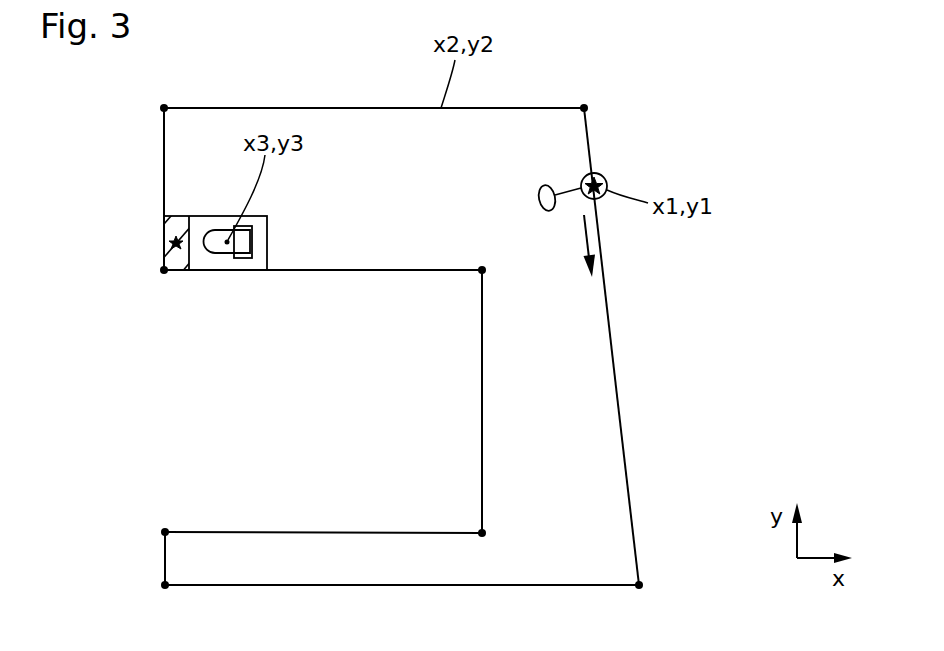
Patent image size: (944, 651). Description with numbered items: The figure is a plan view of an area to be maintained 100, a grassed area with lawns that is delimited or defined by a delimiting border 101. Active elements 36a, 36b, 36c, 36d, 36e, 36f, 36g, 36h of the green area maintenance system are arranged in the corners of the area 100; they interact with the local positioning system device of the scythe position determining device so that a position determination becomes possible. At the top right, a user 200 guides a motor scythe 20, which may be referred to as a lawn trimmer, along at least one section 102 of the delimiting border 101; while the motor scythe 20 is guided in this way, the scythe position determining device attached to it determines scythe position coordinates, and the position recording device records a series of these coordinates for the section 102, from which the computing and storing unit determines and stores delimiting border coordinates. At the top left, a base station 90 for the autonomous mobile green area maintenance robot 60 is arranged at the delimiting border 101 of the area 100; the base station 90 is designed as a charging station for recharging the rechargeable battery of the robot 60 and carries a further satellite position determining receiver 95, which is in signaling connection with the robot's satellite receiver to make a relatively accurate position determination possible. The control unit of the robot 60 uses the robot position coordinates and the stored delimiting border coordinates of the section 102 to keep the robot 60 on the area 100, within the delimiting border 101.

The motor scythe 20 is at (606, 178).
The active element 36a is at (164, 270).
The active element 36b is at (164, 108).
The active element 36c is at (584, 108).
The active element 36d is at (639, 585).
The active element 36e is at (165, 585).
The active element 36f is at (165, 532).
The active element 36g is at (482, 533).
The active element 36h is at (482, 270).
The autonomous mobile green area maintenance robot 60 is at (217, 237).
The base station 90 is at (174, 228).
The further satellite position determining receiver 95 is at (174, 243).
The area to be maintained 100 is at (567, 407).
The delimiting border 101 is at (627, 473).
The section of the delimiting border 102 is at (613, 342).
The user 200 is at (545, 185).